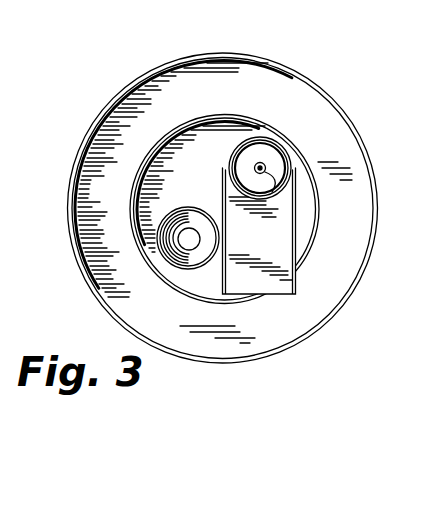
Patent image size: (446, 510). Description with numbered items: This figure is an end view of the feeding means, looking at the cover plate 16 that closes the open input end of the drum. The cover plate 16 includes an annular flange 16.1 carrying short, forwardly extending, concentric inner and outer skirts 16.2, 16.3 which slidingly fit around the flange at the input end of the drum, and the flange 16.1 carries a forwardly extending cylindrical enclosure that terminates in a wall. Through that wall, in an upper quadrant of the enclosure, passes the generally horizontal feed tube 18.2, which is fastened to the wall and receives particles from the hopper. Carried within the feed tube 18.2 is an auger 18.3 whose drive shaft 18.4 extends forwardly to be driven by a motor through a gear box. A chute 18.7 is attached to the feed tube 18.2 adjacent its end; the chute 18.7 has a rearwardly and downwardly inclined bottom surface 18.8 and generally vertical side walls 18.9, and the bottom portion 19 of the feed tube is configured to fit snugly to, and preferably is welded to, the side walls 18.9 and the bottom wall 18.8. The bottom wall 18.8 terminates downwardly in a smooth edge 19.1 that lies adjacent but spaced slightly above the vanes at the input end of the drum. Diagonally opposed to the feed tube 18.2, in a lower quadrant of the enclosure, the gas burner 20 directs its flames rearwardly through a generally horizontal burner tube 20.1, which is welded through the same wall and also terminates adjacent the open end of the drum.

The cover plate 16 is at (333, 98).
The annular flange 16.1 is at (272, 88).
The inner skirt 16.2 is at (222, 115).
The outer skirt 16.3 is at (200, 54).
The feed tube 18.2 is at (234, 150).
The auger 18.3 is at (243, 168).
The drive shaft 18.4 is at (263, 166).
The chute 18.7 is at (296, 220).
The bottom surface of chute 18.8 is at (259, 231).
The side walls of chute 18.9 is at (294, 258).
The bottom portion of feed tube 19 is at (258, 201).
The smooth edge 19.1 is at (274, 294).
The gas burner 20 is at (186, 236).
The burner tube 20.1 is at (158, 249).